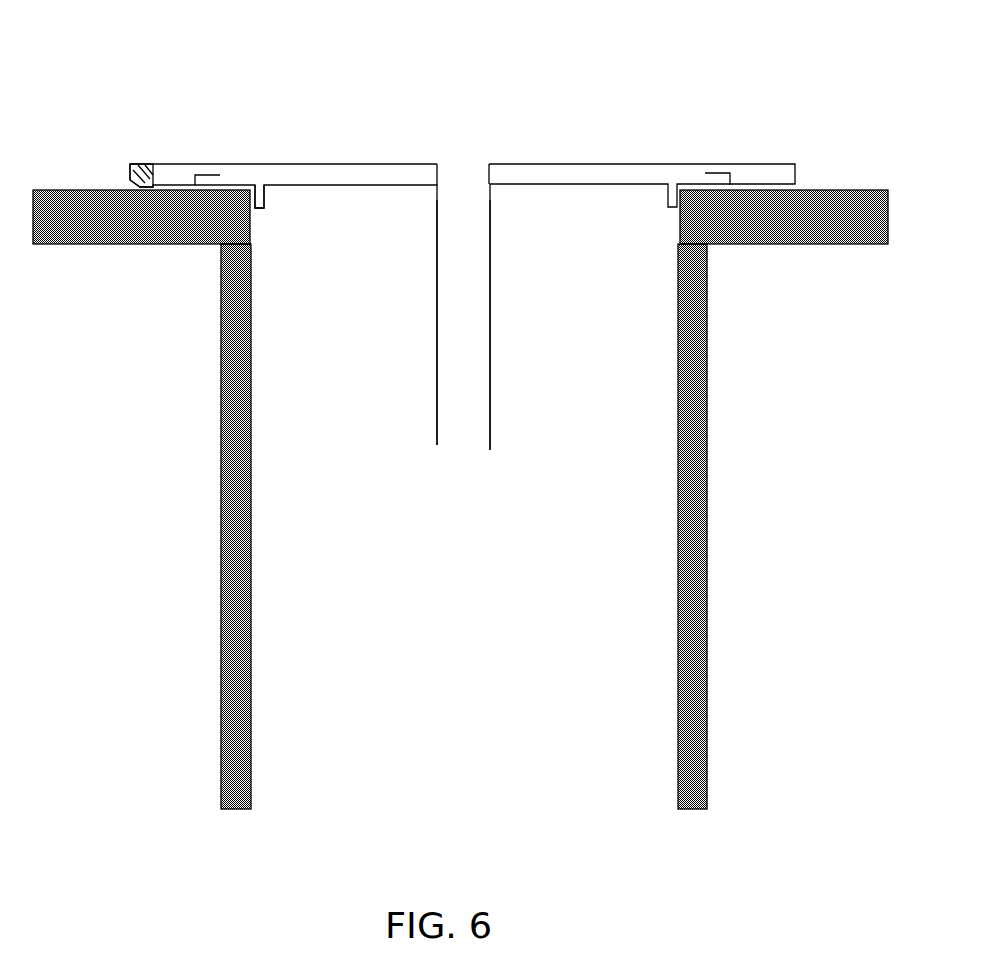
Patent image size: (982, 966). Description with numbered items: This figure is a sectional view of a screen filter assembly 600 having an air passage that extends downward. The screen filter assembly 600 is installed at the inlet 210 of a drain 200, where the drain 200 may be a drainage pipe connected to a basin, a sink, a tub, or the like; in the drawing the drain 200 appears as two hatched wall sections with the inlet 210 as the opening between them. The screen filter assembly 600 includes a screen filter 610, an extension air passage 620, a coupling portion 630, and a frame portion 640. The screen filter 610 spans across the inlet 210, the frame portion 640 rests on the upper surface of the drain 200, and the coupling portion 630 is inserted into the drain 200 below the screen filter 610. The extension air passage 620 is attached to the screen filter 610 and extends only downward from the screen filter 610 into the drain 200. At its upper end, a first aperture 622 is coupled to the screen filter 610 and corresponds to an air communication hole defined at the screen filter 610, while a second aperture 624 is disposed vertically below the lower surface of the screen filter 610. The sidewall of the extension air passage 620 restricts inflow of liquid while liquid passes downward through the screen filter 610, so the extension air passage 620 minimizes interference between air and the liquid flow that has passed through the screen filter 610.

The drain 200 is at (707, 532).
The inlet 210 is at (666, 235).
The screen filter assembly 600 is at (253, 92).
The screen filter 610 is at (565, 163).
The extension air passage 620 is at (487, 390).
The first aperture 622 is at (461, 157).
The second aperture 624 is at (456, 447).
The coupling portion 630 is at (262, 209).
The frame portion 640 is at (151, 168).